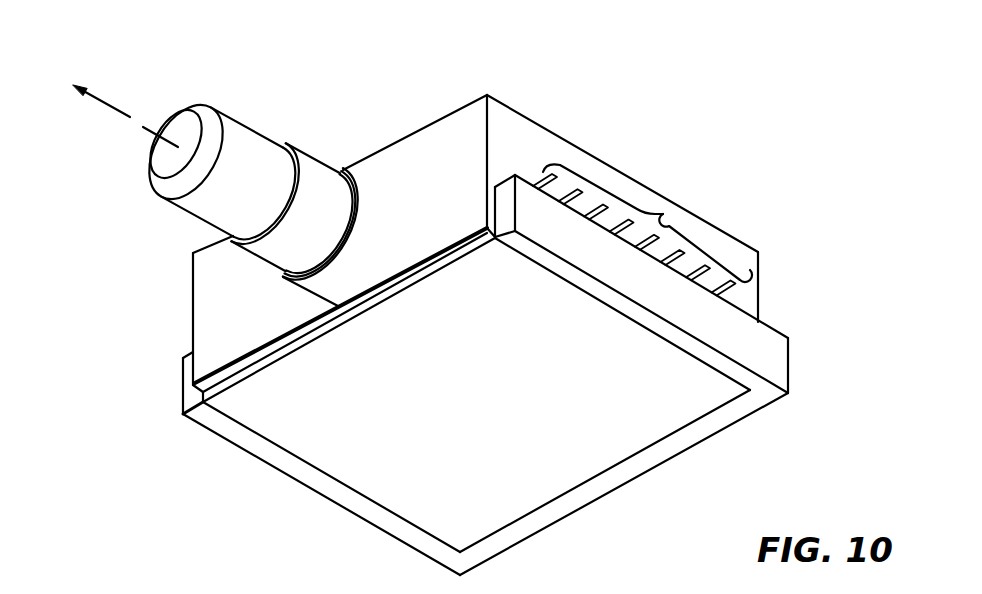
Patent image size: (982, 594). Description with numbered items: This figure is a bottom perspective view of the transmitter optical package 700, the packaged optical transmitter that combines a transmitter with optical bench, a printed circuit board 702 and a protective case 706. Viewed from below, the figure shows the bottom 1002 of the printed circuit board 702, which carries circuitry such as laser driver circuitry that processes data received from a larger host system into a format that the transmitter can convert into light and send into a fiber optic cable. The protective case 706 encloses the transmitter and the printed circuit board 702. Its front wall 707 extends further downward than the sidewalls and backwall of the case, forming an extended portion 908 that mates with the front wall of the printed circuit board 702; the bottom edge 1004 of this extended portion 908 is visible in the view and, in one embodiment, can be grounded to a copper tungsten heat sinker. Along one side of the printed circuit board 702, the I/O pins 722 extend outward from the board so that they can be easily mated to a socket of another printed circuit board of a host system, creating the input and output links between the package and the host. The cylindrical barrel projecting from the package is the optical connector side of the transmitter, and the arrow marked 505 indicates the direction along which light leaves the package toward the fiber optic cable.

The optical axis / light path direction 505 is at (130, 118).
The transmitter optical package 700 is at (512, 295).
The printed circuit board 702 is at (765, 358).
The protective case 706 is at (485, 95).
The front wall 707 is at (420, 163).
The I/O pins 722 is at (680, 214).
The extended portion 908 is at (222, 318).
The bottom 1002 is at (548, 458).
The bottom edge 1004 is at (238, 362).